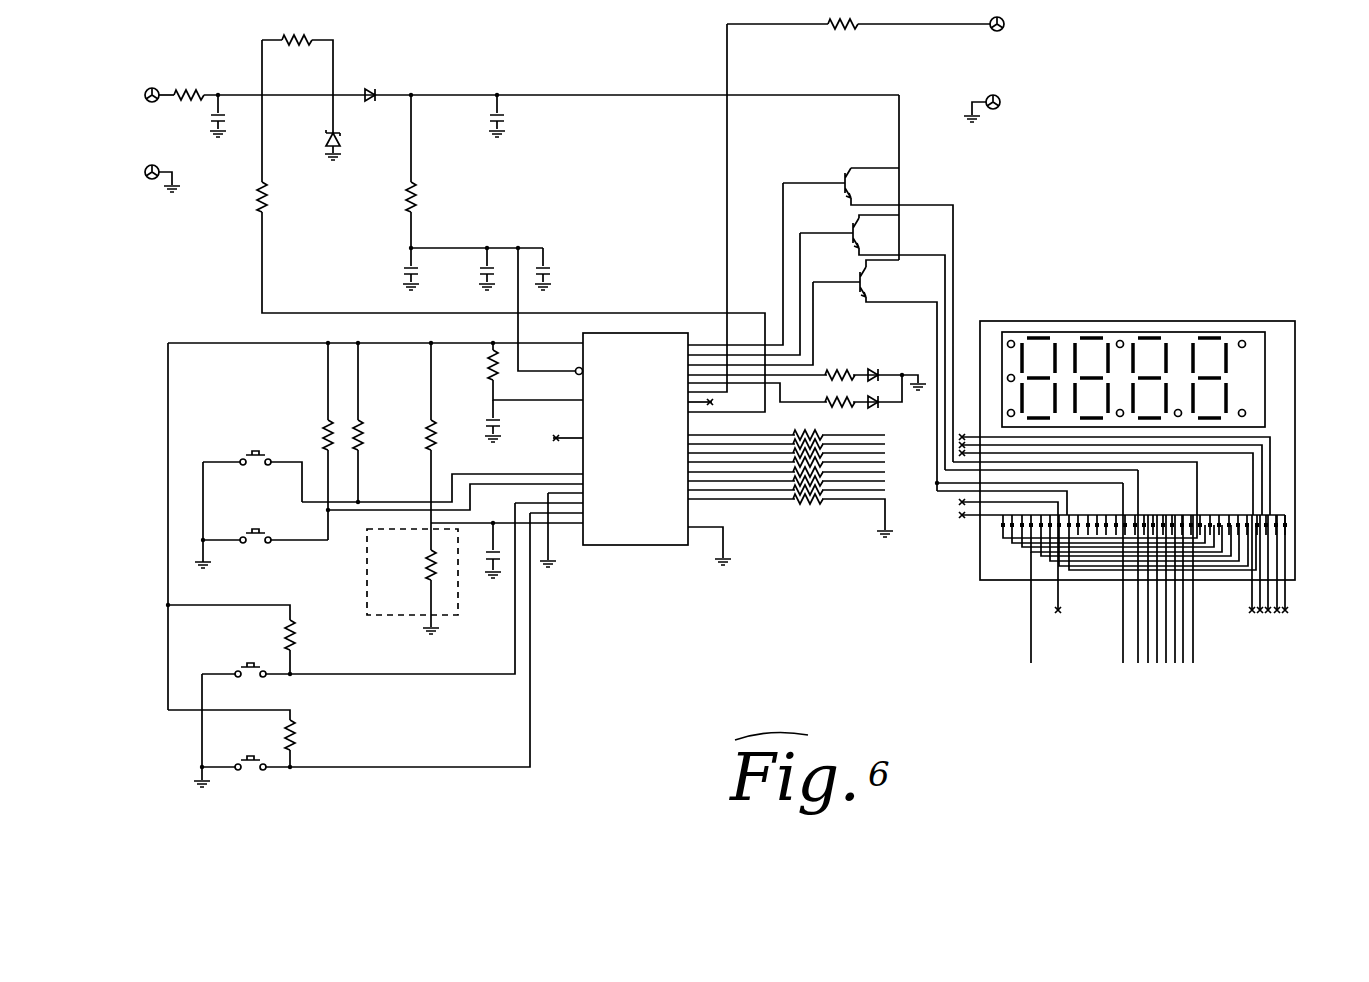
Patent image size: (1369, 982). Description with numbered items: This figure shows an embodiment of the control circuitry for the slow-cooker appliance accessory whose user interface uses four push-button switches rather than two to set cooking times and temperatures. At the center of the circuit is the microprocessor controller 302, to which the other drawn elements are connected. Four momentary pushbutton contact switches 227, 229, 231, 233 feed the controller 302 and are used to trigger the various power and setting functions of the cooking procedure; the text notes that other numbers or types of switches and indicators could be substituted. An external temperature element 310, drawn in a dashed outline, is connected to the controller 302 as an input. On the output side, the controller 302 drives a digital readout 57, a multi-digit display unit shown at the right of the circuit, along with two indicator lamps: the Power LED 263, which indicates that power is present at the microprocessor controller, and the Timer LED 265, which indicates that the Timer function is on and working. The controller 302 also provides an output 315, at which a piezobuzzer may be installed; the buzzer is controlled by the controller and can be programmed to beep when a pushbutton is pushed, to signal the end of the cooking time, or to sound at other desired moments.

The digital readout 57 is at (1280, 352).
The momentary pushbutton contact switch 227 is at (252, 469).
The momentary pushbutton contact switch 229 is at (261, 515).
The momentary pushbutton contact switch 231 is at (340, 590).
The momentary pushbutton contact switch 233 is at (345, 650).
The Power LED 263 is at (897, 372).
The Timer LED 265 is at (898, 407).
The controller 302 is at (652, 545).
The external temperature element 310 is at (458, 603).
The output 315 is at (848, 500).